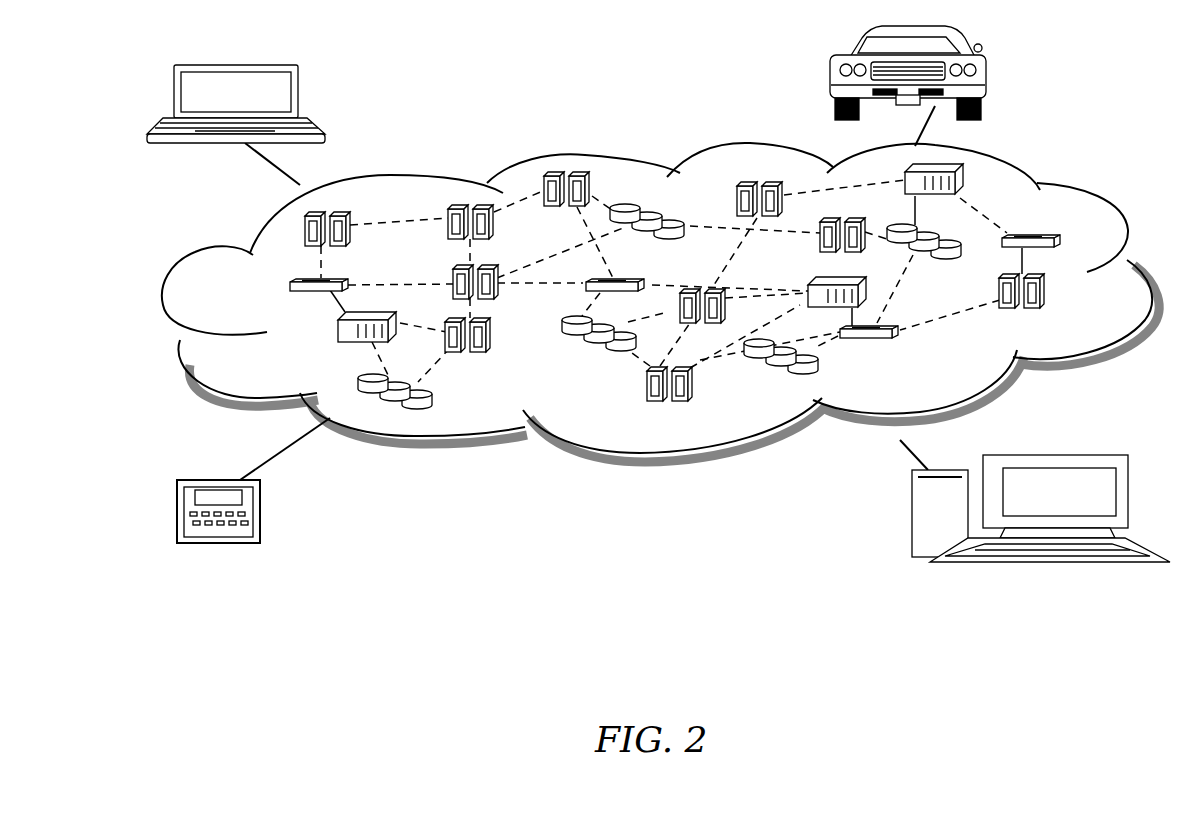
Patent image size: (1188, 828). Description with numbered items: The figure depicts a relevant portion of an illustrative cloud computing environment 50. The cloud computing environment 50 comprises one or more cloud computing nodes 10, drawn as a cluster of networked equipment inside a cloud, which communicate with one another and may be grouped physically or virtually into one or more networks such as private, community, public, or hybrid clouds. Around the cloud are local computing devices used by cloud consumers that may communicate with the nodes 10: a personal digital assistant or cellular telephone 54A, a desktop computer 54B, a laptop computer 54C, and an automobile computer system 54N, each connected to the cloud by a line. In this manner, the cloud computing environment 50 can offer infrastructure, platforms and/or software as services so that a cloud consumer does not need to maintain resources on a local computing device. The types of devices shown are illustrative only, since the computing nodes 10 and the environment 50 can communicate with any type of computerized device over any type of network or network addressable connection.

The cloud computing nodes 10 is at (577, 290).
The cloud computing environment 50 is at (660, 329).
The personal digital assistant (PDA) or cellular telephone 54A is at (200, 481).
The desktop computer 54B is at (988, 501).
The laptop computer 54C is at (193, 125).
The automobile computer system 54N is at (854, 86).